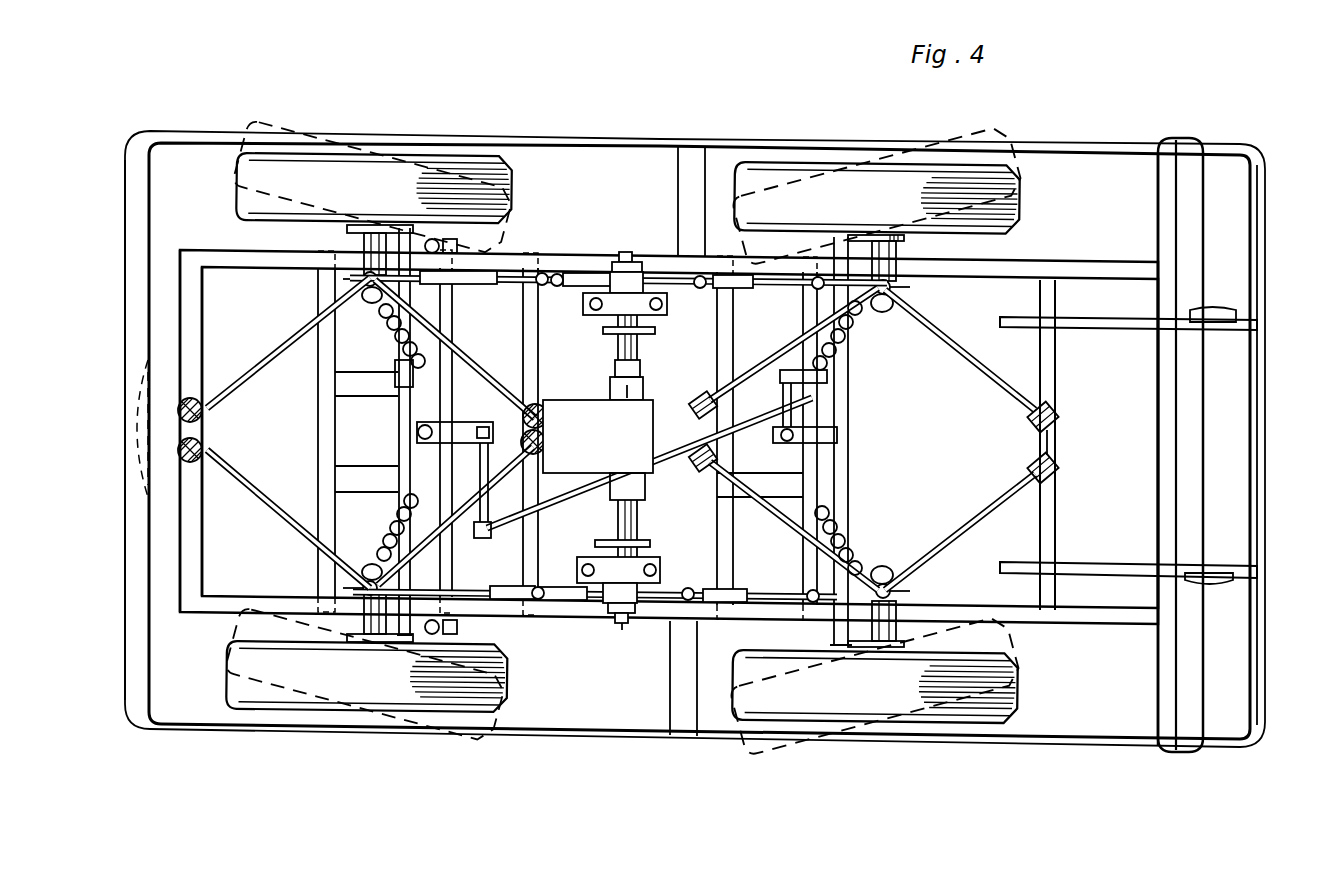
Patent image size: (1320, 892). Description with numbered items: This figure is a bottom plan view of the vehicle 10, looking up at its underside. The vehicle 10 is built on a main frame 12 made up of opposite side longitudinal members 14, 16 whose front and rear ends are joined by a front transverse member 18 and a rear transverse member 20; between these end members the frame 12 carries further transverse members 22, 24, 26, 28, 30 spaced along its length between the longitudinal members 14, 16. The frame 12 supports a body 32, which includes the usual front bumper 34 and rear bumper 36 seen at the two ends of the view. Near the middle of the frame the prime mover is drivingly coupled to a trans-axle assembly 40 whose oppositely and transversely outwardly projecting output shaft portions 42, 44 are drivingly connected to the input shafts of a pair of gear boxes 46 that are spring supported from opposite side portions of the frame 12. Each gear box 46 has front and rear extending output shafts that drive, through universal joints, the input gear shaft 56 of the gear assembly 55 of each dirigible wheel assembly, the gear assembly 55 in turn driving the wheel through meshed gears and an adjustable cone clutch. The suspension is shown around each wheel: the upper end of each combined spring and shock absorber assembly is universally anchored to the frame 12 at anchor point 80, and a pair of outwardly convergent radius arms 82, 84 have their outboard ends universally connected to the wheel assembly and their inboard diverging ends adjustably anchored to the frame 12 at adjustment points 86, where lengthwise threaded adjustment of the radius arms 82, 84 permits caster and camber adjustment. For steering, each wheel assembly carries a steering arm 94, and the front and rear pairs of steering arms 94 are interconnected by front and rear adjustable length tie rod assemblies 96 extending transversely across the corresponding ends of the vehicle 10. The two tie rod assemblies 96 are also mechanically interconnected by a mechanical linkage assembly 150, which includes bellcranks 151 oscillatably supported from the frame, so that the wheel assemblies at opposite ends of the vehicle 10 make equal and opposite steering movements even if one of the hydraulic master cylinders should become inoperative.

The vehicle 10 is at (642, 133).
The main frame 12 is at (558, 248).
The longitudinal member 14 is at (215, 258).
The longitudinal member 16 is at (555, 600).
The front transverse member 18 is at (188, 325).
The rear transverse member 20 is at (1165, 385).
The transverse member 22 is at (318, 384).
The transverse member 24 is at (533, 333).
The transverse member 26 is at (718, 348).
The transverse member 28 is at (805, 312).
The transverse member 30 is at (1047, 380).
The body 32 is at (541, 131).
The front bumper 34 is at (140, 312).
The rear bumper 36 is at (1258, 262).
The trans-axle assembly 40 is at (598, 436).
The output shaft portion 42 is at (640, 518).
The output shaft portion 44 is at (642, 352).
The gear box 46 is at (630, 262).
The gear assembly 55 is at (868, 572).
The input gear shaft 56 is at (822, 605).
The spring and shock absorber anchor 80 is at (445, 348).
The radius arm 82 is at (300, 325).
The radius arm 84 is at (486, 360).
The adjustment point 86 is at (560, 404).
The steering arm 94 is at (392, 238).
The tie rod assembly 96 is at (398, 414).
The mechanical linkage assembly 150 is at (578, 488).
The bellcrank 151 is at (476, 424).